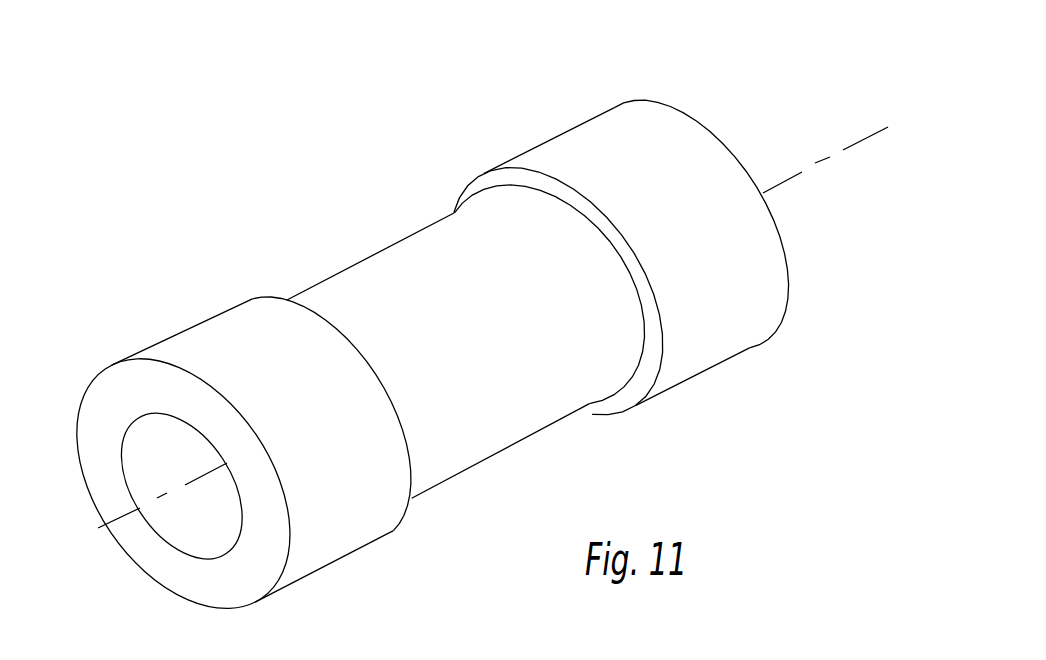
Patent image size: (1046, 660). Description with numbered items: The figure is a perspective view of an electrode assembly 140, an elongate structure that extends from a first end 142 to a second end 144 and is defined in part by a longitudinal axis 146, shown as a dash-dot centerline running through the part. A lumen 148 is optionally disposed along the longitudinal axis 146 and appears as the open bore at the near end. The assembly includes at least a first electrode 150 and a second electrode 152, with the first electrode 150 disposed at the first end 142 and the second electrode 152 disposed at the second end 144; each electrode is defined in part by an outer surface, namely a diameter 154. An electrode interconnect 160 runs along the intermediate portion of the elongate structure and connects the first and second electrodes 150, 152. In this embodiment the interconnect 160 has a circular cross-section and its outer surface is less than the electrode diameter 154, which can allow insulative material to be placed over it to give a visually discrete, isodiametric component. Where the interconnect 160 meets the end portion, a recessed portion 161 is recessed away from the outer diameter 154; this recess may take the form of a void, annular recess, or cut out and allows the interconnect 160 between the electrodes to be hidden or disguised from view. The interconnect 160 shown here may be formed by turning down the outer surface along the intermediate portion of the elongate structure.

The electrode assembly 140 is at (188, 186).
The first end 142 is at (714, 135).
The second end 144 is at (94, 499).
The longitudinal axis 146 is at (187, 484).
The lumen 148 is at (213, 541).
The first electrode 150 is at (628, 103).
The second electrode 152 is at (87, 389).
The diameter 154 is at (337, 558).
The electrode interconnect 160 is at (317, 292).
The recessed portion 161 is at (548, 184).